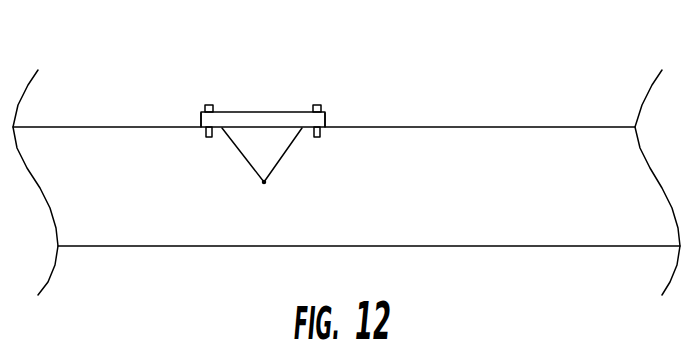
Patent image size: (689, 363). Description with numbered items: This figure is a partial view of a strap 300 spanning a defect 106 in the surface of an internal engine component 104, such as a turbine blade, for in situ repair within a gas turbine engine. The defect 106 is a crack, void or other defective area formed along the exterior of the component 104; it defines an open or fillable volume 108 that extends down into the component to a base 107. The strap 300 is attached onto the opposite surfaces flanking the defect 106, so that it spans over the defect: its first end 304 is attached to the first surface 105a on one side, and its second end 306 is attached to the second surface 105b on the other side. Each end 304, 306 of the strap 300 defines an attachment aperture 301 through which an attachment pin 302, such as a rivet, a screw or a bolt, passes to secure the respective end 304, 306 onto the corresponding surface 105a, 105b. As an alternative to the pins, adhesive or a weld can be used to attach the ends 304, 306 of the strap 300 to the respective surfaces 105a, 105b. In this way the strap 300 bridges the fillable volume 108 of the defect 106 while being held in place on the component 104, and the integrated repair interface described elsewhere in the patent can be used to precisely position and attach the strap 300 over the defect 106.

The internal engine component 104 is at (568, 183).
The first surface 105a is at (128, 112).
The second surface 105b is at (475, 112).
The strap 300 is at (279, 112).
The attachment aperture 301 is at (213, 108).
The attachment pin 302 is at (321, 108).
The first end 304 is at (200, 122).
The second end 306 is at (326, 122).
The defect 106 is at (246, 163).
The fillable volume 108 is at (278, 155).
The base 107 is at (270, 190).